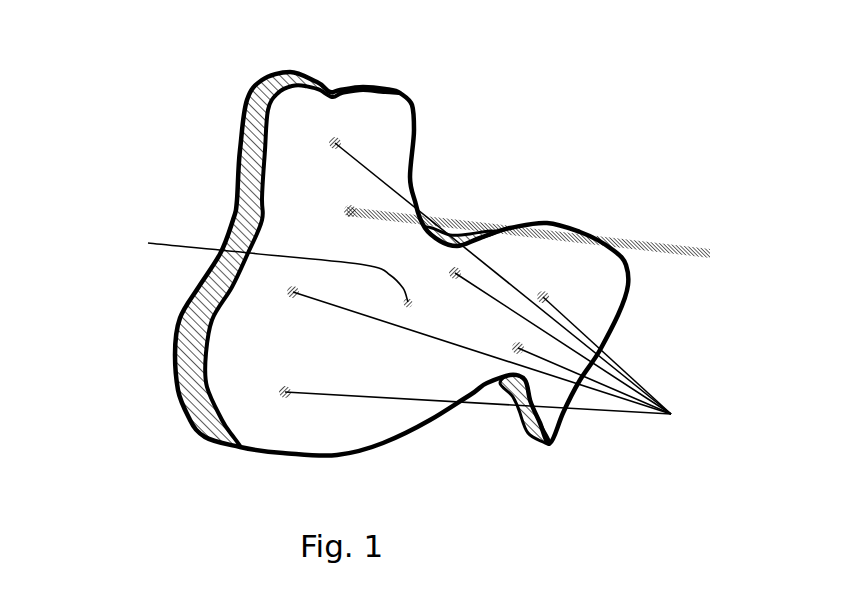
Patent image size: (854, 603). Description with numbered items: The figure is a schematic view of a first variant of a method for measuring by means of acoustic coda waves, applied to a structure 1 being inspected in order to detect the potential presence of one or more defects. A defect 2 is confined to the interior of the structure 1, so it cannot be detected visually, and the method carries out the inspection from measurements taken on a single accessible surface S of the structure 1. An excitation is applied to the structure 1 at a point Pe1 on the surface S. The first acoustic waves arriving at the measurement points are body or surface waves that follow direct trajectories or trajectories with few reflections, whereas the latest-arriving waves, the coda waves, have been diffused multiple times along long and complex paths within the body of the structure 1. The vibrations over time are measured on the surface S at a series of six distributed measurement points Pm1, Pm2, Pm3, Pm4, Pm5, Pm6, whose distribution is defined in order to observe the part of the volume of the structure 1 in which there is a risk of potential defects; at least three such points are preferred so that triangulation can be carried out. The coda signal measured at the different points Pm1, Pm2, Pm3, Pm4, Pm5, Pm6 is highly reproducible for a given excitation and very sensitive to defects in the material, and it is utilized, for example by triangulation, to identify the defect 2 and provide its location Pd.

The structure 1 is at (240, 208).
The defect 2 is at (269, 267).
The accessible surface S is at (393, 133).
The location of the defect Pd is at (407, 304).
The excitation point Pe1 is at (350, 211).
The measurement point Pm1 is at (285, 392).
The measurement point Pm2 is at (293, 292).
The measurement point Pm3 is at (335, 143).
The measurement point Pm4 is at (455, 273).
The measurement point Pm5 is at (545, 296).
The measurement point Pm6 is at (515, 347).